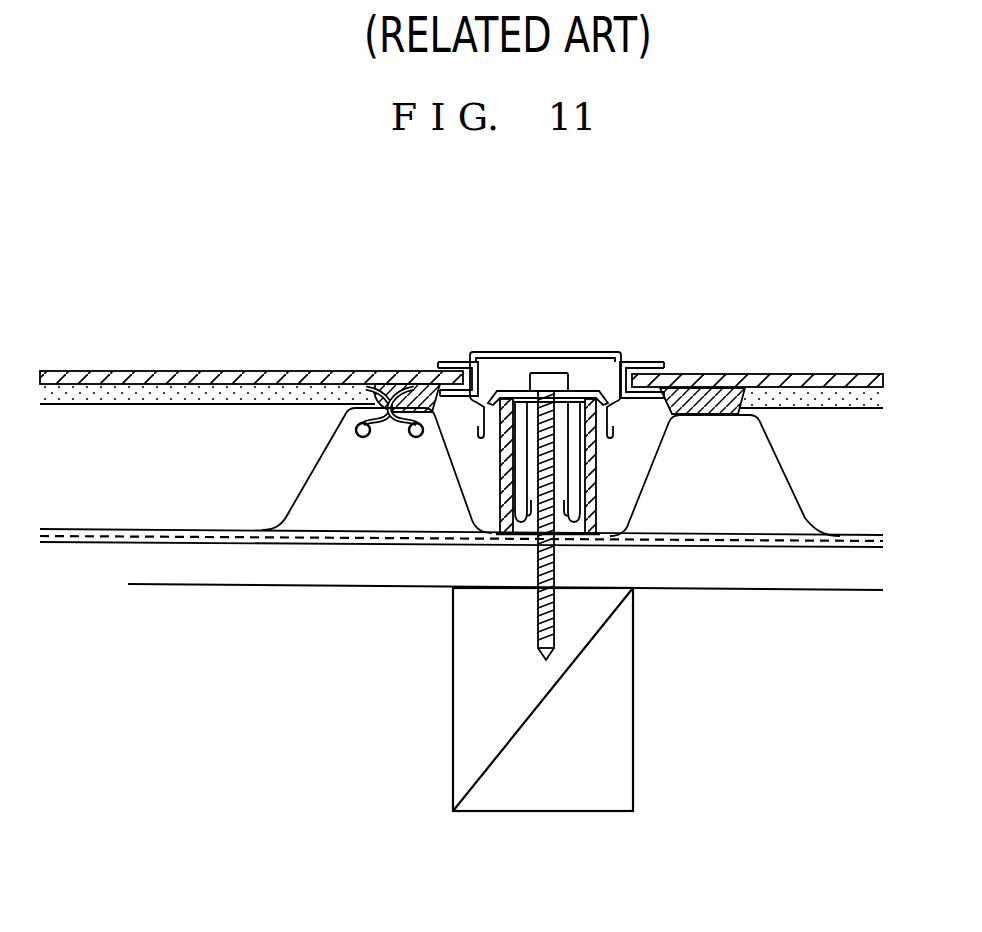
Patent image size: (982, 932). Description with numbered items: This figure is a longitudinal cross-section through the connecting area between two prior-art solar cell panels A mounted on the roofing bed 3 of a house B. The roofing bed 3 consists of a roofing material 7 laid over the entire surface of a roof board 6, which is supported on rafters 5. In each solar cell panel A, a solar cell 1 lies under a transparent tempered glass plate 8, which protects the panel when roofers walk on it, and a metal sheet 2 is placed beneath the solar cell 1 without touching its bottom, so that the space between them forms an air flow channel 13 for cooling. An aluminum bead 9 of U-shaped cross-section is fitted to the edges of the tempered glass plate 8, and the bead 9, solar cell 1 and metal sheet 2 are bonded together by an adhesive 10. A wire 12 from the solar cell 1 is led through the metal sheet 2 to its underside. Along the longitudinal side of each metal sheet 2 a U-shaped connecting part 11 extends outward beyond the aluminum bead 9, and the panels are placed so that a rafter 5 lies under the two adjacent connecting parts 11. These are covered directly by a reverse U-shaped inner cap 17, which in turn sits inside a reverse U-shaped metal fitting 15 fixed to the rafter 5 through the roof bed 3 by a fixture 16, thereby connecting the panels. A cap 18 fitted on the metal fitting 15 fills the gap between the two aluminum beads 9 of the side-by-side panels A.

The solar cell 1 is at (243, 388).
The metal sheet 2 is at (290, 512).
The roofing bed 3 is at (706, 588).
The rafter 5 is at (620, 781).
The roof board 6 is at (798, 580).
The roofing material 7 is at (818, 546).
The tempered glass plate 8 is at (355, 371).
The aluminum bead 9 is at (452, 362).
The adhesive 10 is at (405, 385).
The connecting part 11 is at (523, 494).
The wire 12 is at (358, 438).
The air flow channel 13 is at (165, 515).
The metal fitting 15 is at (596, 455).
The fixture 16 is at (581, 399).
The inner cap 17 is at (600, 392).
The cap 18 is at (537, 352).
The solar cell panel A is at (190, 370).
The house B is at (723, 765).